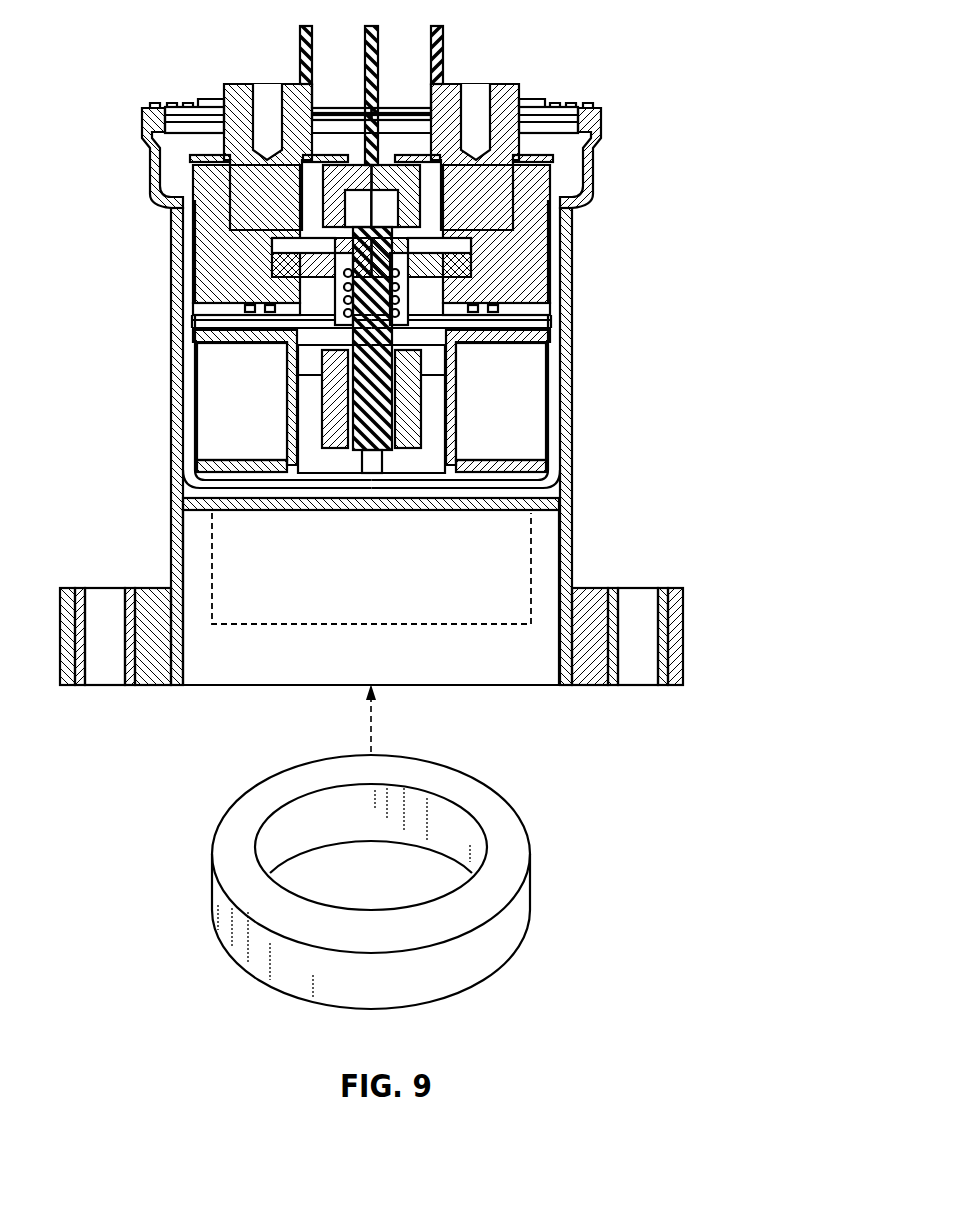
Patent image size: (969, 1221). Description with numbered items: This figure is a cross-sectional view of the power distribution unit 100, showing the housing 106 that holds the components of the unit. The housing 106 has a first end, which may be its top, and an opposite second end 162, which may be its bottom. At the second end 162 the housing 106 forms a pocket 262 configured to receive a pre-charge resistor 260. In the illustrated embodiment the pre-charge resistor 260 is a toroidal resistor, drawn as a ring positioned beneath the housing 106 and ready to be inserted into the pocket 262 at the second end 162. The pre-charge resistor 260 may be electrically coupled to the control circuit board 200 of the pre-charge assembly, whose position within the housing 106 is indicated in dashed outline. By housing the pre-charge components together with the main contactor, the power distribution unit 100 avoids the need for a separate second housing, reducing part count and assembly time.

The power distribution unit 100 is at (371, 406).
The housing 106 is at (568, 498).
The second end 162 is at (263, 690).
The control circuit board 200 is at (221, 632).
The pocket 262 is at (473, 648).
The pre-charge resistor 260 is at (527, 897).